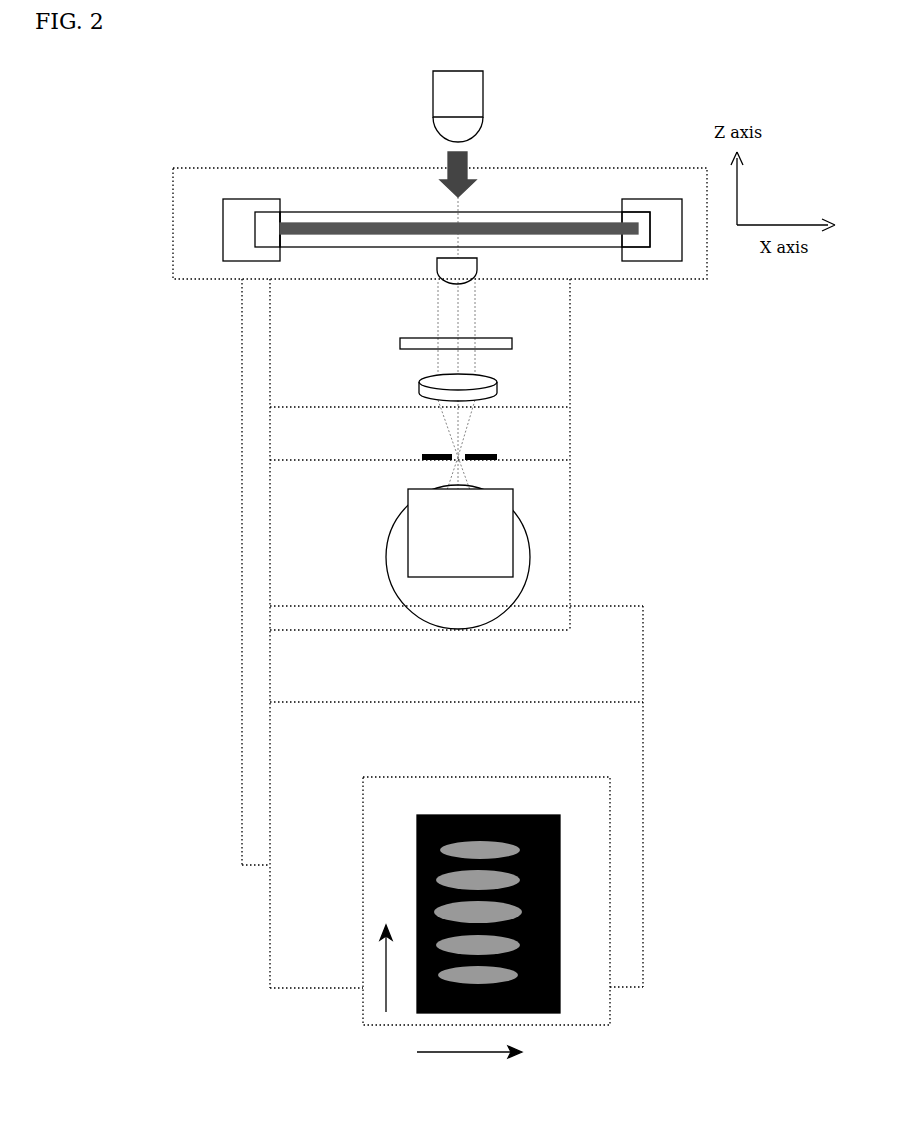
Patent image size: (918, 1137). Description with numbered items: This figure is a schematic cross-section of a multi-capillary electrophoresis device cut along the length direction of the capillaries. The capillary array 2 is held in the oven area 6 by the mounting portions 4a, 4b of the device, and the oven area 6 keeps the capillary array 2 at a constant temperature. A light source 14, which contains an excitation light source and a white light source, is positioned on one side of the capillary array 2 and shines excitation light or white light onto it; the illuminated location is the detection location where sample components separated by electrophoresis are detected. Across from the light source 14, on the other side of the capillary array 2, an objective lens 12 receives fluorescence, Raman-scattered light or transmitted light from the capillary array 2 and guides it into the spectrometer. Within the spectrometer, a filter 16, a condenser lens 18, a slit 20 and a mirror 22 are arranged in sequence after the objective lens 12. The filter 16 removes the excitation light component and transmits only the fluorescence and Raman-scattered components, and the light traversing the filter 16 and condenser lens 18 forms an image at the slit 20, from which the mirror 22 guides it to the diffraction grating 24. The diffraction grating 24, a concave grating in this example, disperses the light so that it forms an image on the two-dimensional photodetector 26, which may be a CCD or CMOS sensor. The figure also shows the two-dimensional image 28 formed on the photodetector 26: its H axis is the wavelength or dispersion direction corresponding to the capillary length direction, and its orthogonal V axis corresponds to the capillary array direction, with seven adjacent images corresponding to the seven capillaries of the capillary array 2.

The capillary array 2 is at (520, 223).
The mounting portion 4a is at (248, 199).
The mounting portion 4b is at (658, 199).
The oven area 6 is at (340, 168).
The objective lens 12 is at (478, 270).
The light source 14 is at (487, 83).
The filter 16 is at (512, 341).
The condenser lens 18 is at (497, 393).
The slit 20 is at (497, 456).
The mirror 22 is at (503, 510).
The diffraction grating 24 is at (531, 558).
The 2D photodetector 26 is at (610, 838).
The 2D image 28 is at (550, 813).